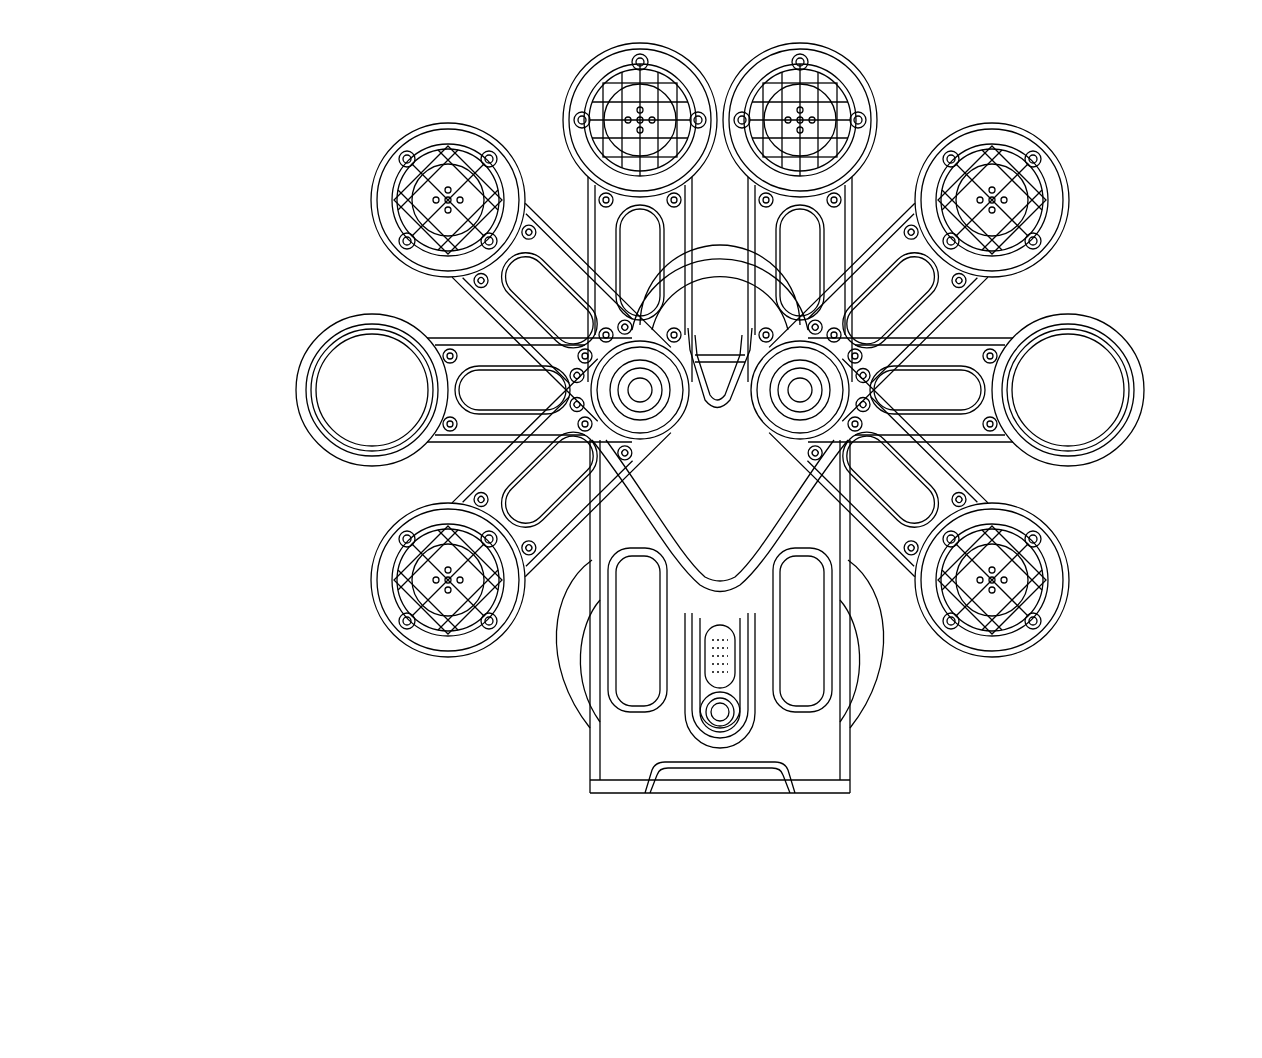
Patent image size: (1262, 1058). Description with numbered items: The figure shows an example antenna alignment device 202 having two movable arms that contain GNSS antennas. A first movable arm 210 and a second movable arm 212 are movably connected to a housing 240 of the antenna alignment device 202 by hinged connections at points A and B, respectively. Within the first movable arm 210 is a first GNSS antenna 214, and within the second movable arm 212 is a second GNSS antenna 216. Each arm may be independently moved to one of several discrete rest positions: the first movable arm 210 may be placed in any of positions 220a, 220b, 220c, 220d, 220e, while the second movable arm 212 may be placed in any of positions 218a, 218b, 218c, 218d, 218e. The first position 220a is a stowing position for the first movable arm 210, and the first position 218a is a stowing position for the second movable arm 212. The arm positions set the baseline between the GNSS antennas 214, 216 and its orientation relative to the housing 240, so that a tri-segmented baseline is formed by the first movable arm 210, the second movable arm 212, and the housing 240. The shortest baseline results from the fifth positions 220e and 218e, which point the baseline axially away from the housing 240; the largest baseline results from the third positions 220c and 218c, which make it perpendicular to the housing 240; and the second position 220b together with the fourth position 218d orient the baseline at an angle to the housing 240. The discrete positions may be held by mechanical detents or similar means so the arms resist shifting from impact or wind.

The antenna alignment device 202 is at (718, 909).
The first movable arm 210 is at (1118, 383).
The second movable arm 212 is at (325, 375).
The first GNSS antenna 214 is at (992, 580).
The second GNSS antenna 216 is at (450, 580).
The first position of the second movable arm 218a is at (568, 717).
The second position of the second movable arm 218b is at (380, 624).
The third position of the second movable arm 218c is at (303, 441).
The fourth position of the second movable arm 218d is at (385, 257).
The fifth position of the second movable arm 218e is at (560, 119).
The first position of the first movable arm 220a is at (926, 717).
The second position of the first movable arm 220b is at (1084, 677).
The third position of the first movable arm 220c is at (1160, 482).
The fourth position of the first movable arm 220d is at (1117, 257).
The fifth position of the first movable arm 220e is at (940, 119).
The housing 240 is at (695, 490).
The connection point of the first movable arm A is at (800, 390).
The connection point of the second movable arm B is at (640, 390).